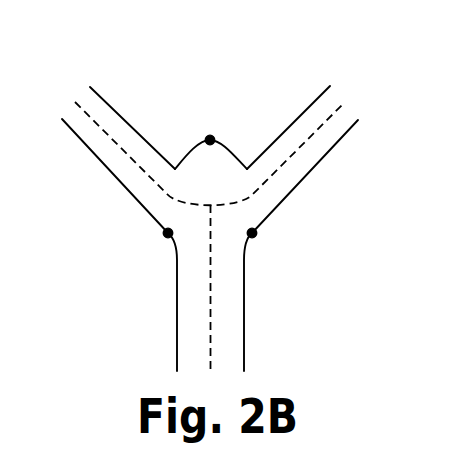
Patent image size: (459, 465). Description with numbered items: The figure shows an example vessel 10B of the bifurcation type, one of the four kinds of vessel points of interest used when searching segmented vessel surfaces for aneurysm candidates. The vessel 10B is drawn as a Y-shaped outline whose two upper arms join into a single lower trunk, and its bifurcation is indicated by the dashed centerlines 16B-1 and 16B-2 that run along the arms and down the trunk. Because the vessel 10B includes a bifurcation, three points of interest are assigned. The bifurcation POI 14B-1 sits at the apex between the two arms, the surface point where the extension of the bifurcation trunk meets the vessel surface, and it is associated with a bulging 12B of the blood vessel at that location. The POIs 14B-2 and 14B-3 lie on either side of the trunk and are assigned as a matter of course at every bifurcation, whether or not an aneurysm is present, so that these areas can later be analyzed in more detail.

The vessel 10B is at (115, 62).
The bulging 12B is at (193, 157).
The bifurcation POI 14B-1 is at (212, 140).
The POI 14B-2 is at (168, 233).
The POI 14B-3 is at (252, 233).
The centerline 16B-1 is at (340, 104).
The centerline 16B-2 is at (211, 310).